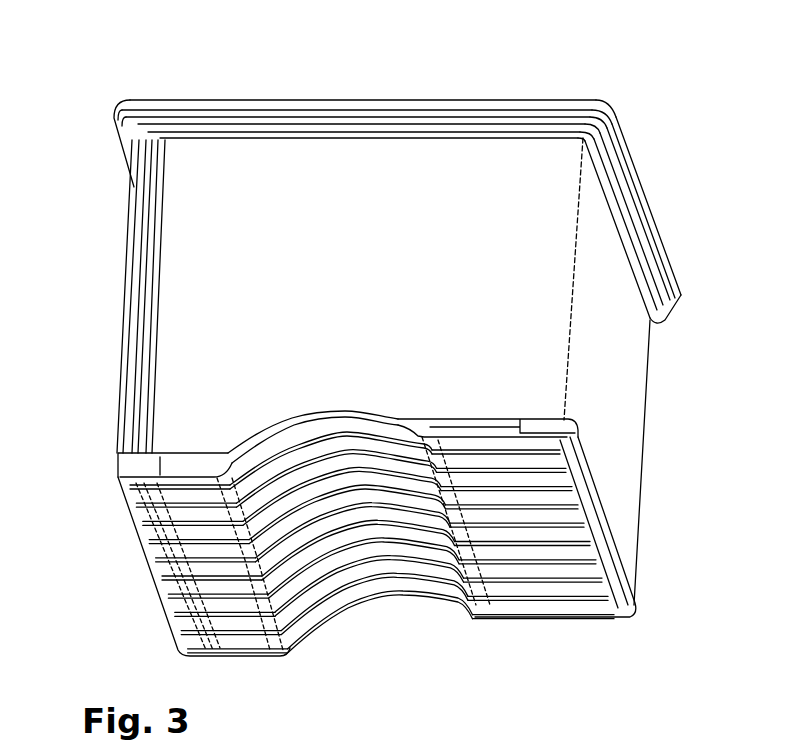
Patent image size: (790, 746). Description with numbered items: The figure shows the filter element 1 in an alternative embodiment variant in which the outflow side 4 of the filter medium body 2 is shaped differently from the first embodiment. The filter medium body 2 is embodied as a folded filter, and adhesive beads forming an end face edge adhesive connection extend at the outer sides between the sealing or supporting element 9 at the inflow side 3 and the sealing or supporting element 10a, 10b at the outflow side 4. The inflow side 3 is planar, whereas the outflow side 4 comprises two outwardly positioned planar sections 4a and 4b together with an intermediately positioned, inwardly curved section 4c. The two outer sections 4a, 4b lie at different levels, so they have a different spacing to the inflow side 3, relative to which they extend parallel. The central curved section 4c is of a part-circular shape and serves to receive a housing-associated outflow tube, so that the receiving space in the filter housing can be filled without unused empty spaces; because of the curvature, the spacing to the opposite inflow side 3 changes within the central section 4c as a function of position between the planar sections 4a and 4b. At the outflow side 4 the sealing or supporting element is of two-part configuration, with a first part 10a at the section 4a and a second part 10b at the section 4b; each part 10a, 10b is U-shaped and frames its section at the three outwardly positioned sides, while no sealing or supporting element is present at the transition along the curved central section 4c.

The filter element 1 is at (158, 52).
The filter medium body 2 is at (635, 382).
The inflow side 3 is at (448, 97).
The sealing or supporting element 9 is at (601, 103).
The outflow side 4 is at (390, 613).
The outwardly positioned planar section 4a is at (205, 584).
The outwardly positioned planar section 4b is at (563, 598).
The central curved section 4c is at (427, 598).
The first part of sealing or supporting element 10a is at (118, 465).
The second part of sealing or supporting element 10b is at (625, 613).